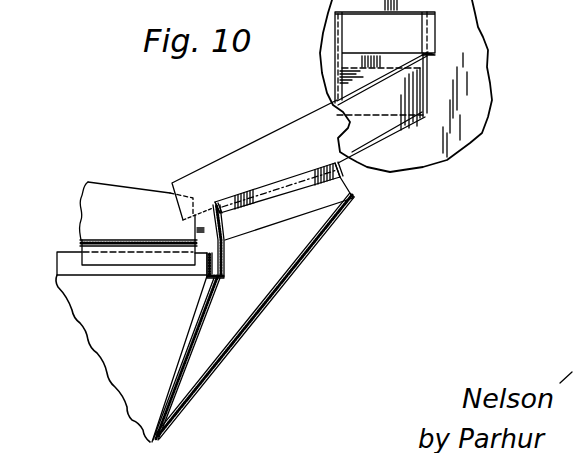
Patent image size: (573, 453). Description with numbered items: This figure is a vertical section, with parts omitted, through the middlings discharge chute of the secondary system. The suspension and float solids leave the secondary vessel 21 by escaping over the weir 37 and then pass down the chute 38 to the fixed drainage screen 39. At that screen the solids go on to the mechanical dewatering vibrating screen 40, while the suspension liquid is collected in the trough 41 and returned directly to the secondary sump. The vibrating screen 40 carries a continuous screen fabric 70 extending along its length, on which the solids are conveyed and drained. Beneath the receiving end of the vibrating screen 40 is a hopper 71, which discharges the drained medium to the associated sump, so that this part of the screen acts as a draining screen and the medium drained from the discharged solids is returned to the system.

The secondary vessel 21 is at (491, 30).
The weir 37 is at (371, 55).
The chute 38 is at (283, 143).
The fixed drainage screen 39 is at (238, 196).
The mechanical dewatering vibrating screen 40 is at (100, 182).
The trough 41 is at (270, 299).
The continuous screen fabric 70 is at (117, 240).
The hopper 71 is at (93, 313).